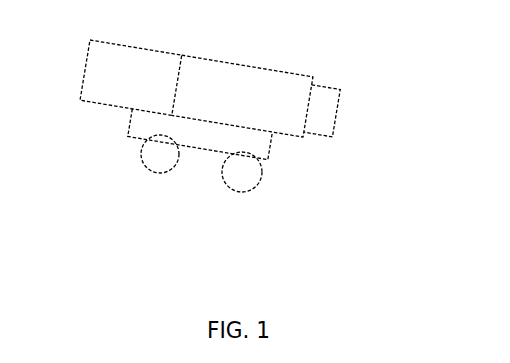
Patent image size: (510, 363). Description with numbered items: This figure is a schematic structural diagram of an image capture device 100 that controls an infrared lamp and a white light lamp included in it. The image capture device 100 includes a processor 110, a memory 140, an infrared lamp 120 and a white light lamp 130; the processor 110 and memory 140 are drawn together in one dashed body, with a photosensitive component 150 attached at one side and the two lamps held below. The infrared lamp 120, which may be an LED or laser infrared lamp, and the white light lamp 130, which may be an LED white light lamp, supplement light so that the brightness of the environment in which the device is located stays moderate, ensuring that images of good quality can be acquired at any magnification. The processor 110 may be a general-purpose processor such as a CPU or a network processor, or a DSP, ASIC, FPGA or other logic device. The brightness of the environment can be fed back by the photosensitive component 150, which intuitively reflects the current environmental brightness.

The image capture device 100 is at (447, 127).
The processor 110 is at (248, 77).
The infrared lamp 120 is at (168, 174).
The white light lamp 130 is at (247, 192).
The memory 140 is at (102, 80).
The photosensitive component 150 is at (308, 120).